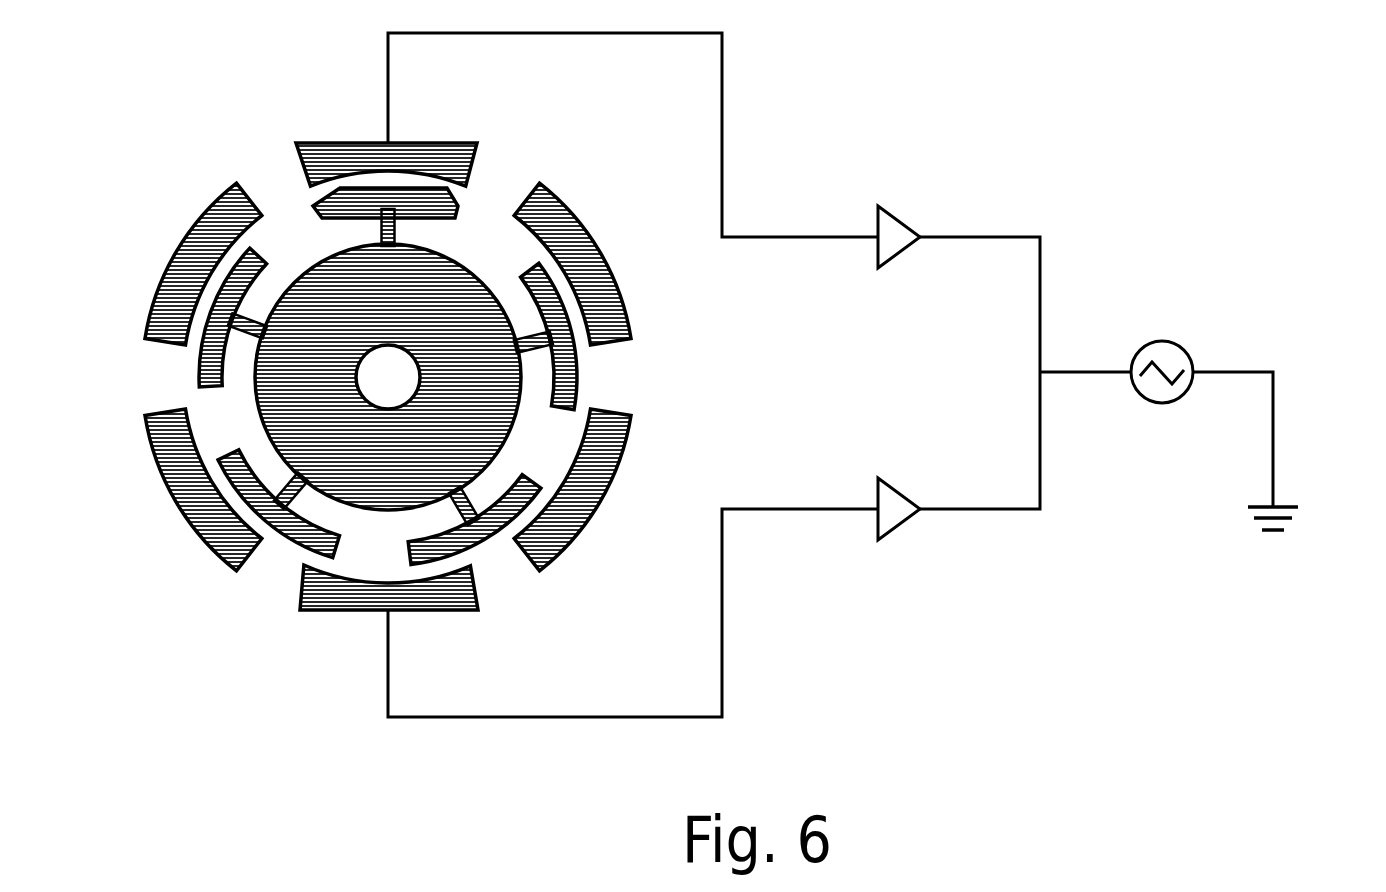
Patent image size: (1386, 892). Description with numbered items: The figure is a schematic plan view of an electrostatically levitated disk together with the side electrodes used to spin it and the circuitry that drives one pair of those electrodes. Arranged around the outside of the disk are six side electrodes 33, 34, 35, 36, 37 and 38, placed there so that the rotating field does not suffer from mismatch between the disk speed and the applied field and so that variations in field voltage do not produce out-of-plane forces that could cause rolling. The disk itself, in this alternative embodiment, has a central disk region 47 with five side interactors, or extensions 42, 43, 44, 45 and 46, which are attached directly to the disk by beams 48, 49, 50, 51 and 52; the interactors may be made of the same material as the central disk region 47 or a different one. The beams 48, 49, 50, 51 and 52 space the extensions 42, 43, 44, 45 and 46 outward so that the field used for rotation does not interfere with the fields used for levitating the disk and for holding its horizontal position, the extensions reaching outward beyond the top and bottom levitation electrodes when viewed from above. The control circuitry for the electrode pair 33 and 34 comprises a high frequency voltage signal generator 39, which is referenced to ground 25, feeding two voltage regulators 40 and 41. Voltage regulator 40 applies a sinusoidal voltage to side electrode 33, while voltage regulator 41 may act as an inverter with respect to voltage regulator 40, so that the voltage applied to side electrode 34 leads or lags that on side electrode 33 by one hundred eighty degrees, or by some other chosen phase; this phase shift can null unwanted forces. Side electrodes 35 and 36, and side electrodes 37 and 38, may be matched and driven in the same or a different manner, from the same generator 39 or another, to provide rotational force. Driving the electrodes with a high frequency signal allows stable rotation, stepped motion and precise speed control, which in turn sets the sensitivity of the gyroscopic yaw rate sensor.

The ground 25 is at (1300, 517).
The side electrode 33 is at (362, 150).
The side electrode 34 is at (362, 603).
The side electrode 35 is at (567, 240).
The side electrode 36 is at (207, 515).
The side electrode 37 is at (573, 512).
The side electrode 38 is at (210, 245).
The high frequency voltage signal generator 39 is at (1159, 402).
The voltage regulator 40 is at (892, 228).
The voltage regulator 41 is at (898, 515).
The extension 42 is at (460, 210).
The extension 43 is at (580, 377).
The extension 44 is at (483, 537).
The extension 45 is at (295, 535).
The extension 46 is at (197, 370).
The central disk region 47 is at (330, 272).
The beam 48 is at (396, 231).
The beam 49 is at (527, 352).
The beam 50 is at (463, 500).
The beam 51 is at (290, 485).
The beam 52 is at (255, 315).